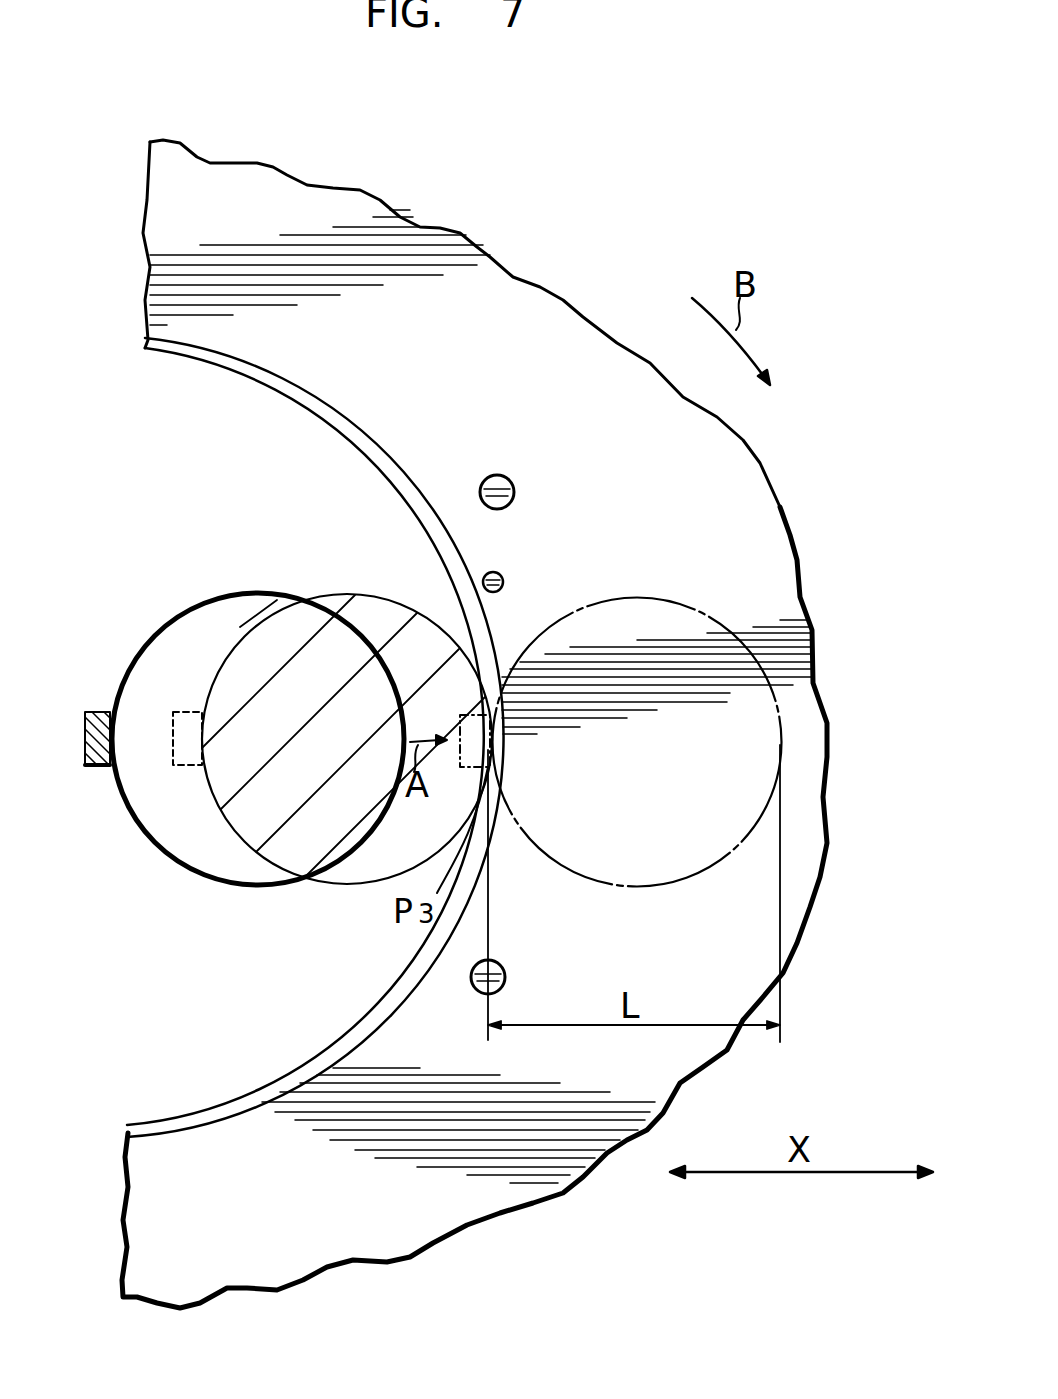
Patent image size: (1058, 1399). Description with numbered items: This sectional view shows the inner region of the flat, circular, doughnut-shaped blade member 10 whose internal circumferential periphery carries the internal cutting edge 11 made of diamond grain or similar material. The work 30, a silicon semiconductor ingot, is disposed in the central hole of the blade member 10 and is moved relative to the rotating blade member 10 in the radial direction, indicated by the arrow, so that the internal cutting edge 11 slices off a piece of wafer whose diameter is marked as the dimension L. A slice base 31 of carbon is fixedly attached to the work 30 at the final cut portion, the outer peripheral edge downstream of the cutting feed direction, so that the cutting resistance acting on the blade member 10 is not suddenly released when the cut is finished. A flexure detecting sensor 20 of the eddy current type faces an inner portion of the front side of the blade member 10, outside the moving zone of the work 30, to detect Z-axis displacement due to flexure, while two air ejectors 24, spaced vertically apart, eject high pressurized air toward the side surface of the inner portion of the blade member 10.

The blade member 10 is at (418, 240).
The internal cutting edge 11 is at (198, 362).
The flexure detecting sensor 20 is at (500, 573).
The air ejector 24 is at (510, 478).
The work 30 is at (163, 630).
The slice base 31 is at (457, 713).